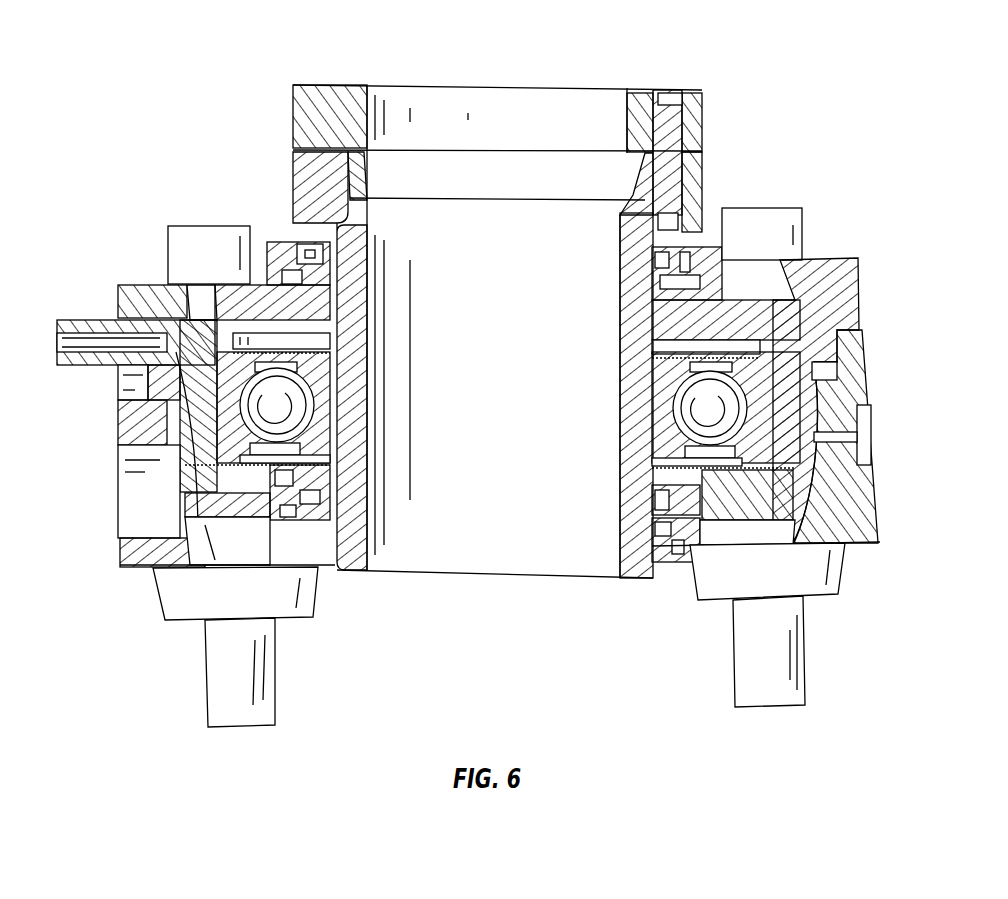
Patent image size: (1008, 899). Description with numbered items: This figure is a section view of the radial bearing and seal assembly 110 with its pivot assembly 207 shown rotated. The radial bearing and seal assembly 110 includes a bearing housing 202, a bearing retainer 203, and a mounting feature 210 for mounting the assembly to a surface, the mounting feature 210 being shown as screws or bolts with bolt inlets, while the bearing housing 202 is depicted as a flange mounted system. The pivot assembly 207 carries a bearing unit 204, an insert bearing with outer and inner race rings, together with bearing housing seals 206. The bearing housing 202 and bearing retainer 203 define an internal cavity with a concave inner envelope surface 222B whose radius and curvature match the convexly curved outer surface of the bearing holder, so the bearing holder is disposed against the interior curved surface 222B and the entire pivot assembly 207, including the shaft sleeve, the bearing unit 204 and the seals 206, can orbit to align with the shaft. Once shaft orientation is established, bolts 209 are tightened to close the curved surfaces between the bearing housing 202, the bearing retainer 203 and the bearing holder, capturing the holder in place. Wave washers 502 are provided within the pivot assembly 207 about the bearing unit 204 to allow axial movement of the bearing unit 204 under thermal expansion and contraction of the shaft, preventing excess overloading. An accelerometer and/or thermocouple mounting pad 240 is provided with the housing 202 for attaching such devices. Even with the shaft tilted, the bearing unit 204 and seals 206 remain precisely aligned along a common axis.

The radial bearing and seal assembly 110 is at (213, 72).
The bearing unit 204 is at (210, 322).
The concave inner envelope surface 222B is at (150, 287).
The wave washers 502 is at (220, 467).
The pivot assembly 207 is at (548, 512).
The bearing housing seals 206 is at (698, 245).
The bolts 209 is at (797, 207).
The bearing retainer 203 is at (838, 256).
The accelerometer and/or thermocouple mounting pad 240 is at (865, 434).
The bearing housing 202 is at (857, 546).
The mounting feature 210 is at (808, 590).